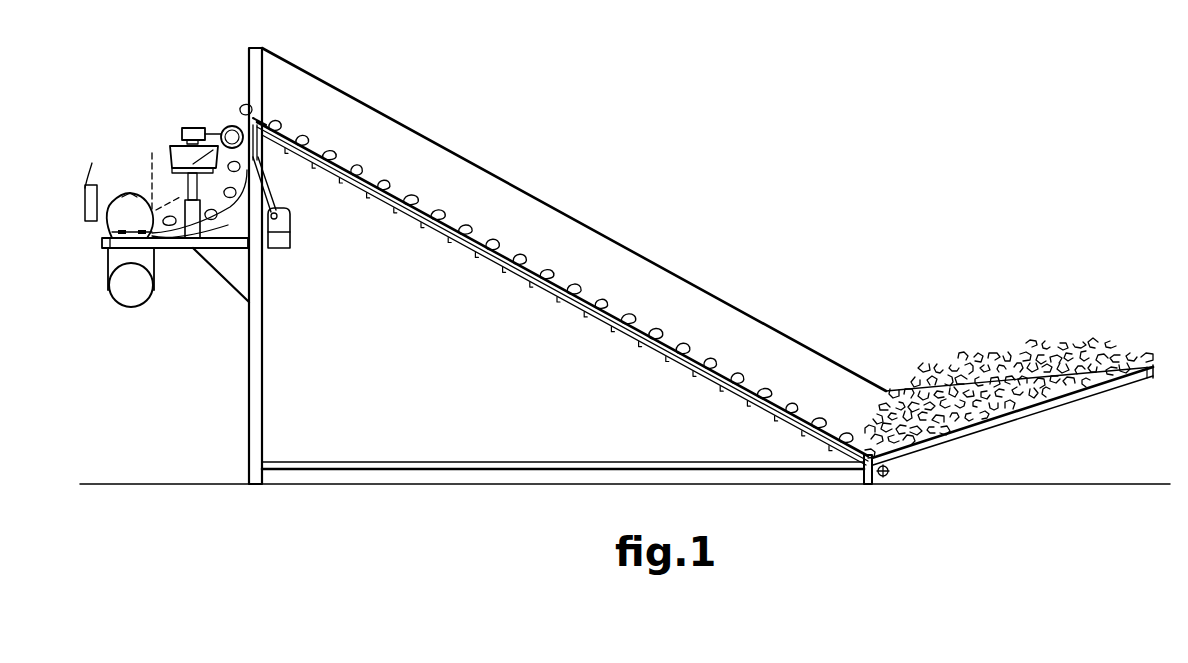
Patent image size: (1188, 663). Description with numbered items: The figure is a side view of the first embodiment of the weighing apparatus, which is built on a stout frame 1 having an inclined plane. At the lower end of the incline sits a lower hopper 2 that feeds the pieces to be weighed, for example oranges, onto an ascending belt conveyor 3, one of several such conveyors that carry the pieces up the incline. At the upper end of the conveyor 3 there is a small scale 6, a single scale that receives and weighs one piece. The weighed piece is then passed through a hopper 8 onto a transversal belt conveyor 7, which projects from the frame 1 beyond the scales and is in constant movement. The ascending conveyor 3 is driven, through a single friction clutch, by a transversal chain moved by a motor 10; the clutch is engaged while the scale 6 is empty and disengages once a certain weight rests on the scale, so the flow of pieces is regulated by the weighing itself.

The frame 1 is at (704, 290).
The lower hopper 2 is at (1012, 425).
The ascending belt conveyor 3 is at (588, 310).
The small scale 6 is at (181, 130).
The transversal belt conveyor 7 is at (121, 193).
The hopper 8 is at (226, 234).
The motor 10 is at (127, 296).